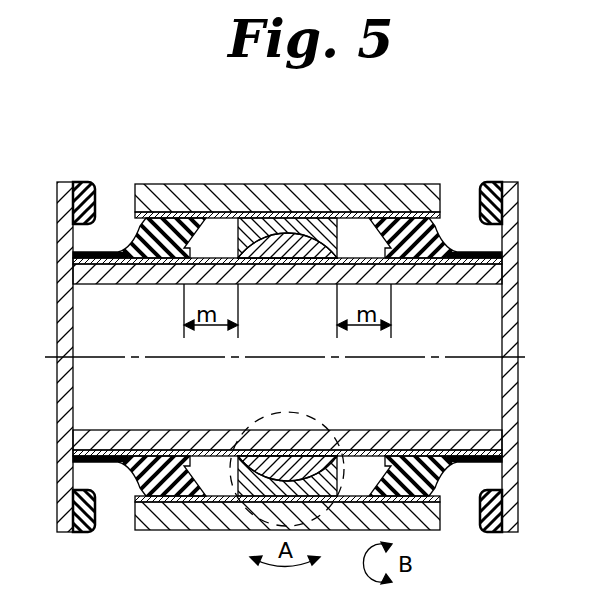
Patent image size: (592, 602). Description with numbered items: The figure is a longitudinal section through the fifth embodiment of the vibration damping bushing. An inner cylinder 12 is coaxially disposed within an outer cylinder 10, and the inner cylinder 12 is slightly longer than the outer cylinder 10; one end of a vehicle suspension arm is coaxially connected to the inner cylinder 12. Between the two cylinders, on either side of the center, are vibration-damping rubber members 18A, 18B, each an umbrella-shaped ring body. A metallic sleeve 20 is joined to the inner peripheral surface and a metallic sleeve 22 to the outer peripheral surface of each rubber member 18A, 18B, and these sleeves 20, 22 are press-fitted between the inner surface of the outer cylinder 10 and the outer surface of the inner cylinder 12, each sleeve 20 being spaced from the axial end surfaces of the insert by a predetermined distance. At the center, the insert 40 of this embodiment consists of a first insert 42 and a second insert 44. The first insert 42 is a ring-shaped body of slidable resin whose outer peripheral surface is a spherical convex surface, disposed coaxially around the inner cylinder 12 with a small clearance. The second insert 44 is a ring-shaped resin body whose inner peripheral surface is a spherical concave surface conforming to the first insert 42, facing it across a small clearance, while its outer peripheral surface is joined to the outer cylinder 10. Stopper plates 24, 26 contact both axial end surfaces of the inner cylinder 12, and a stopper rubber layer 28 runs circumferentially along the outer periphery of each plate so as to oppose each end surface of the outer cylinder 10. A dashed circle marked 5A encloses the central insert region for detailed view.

The outer cylinder 10 is at (255, 198).
The inner cylinder 12 is at (100, 285).
The vibration-damping rubber member 18A is at (136, 236).
The vibration-damping rubber member 18B is at (438, 243).
The metallic sleeve 20 is at (142, 284).
The metallic sleeve 22 is at (180, 213).
The stopper plate 24 is at (63, 182).
The stopper plate 26 is at (511, 225).
The stopper rubber layer 28 is at (88, 182).
The insert 40 is at (227, 245).
The first insert 42 is at (292, 243).
The second insert 44 is at (295, 225).
The detail region of FIG. 5A is at (232, 518).